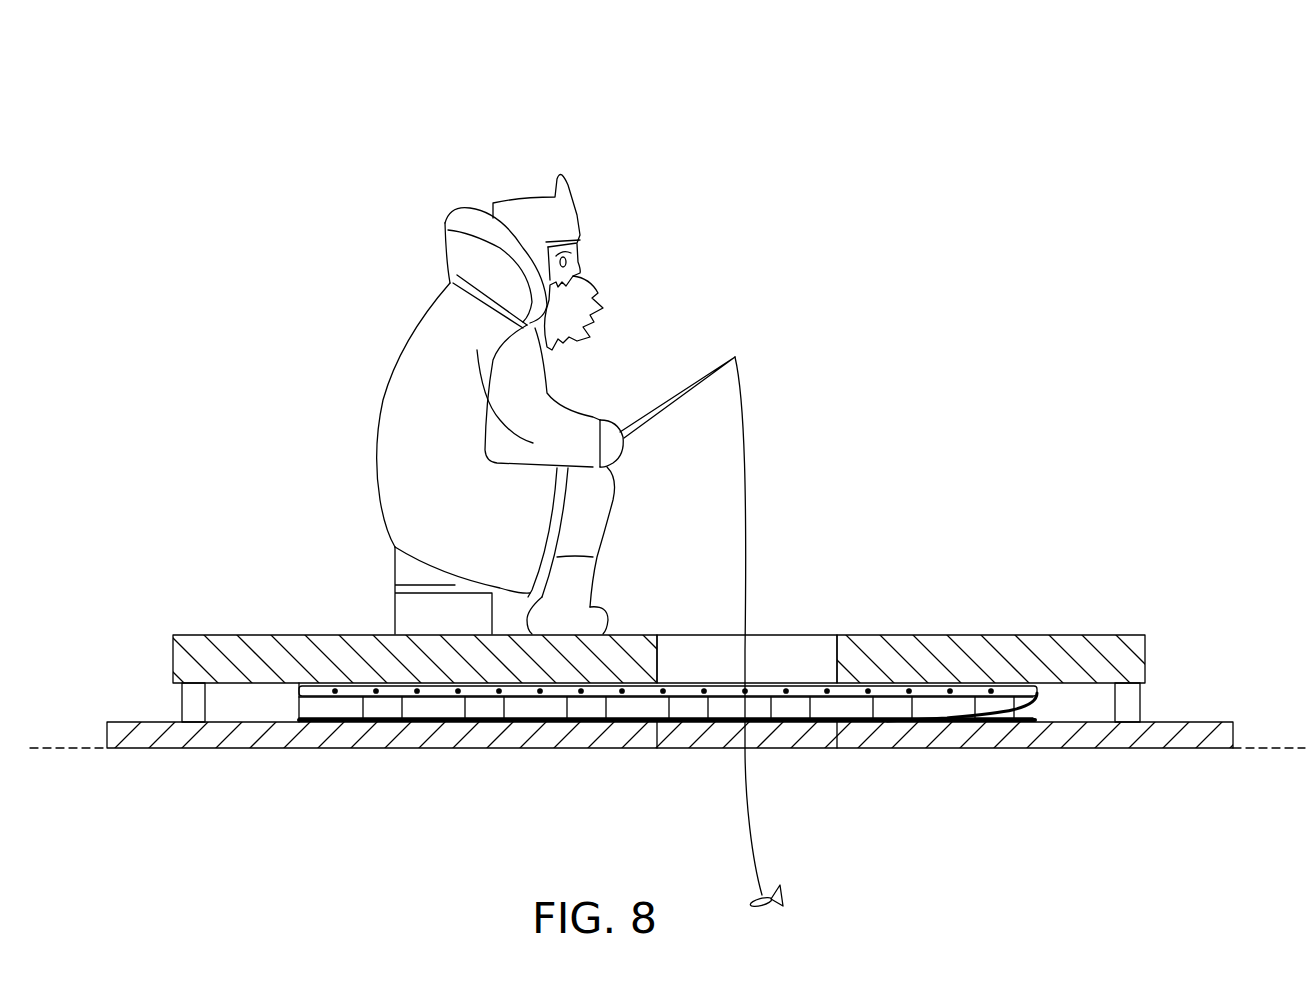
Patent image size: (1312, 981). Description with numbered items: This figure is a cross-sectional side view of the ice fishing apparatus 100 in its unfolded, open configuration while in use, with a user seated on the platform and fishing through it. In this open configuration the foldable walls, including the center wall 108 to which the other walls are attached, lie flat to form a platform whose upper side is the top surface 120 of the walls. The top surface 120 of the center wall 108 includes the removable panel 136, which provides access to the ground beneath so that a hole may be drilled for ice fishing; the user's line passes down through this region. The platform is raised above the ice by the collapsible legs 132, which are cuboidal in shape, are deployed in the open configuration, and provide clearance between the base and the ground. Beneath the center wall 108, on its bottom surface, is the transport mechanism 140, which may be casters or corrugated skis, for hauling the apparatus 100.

The ice fishing apparatus 100 is at (351, 92).
The center wall 108 is at (605, 650).
The removable panel 136 is at (805, 650).
The top surface 120 is at (1100, 643).
The collapsible legs 132 is at (183, 707).
The transport mechanism 140 is at (1013, 712).